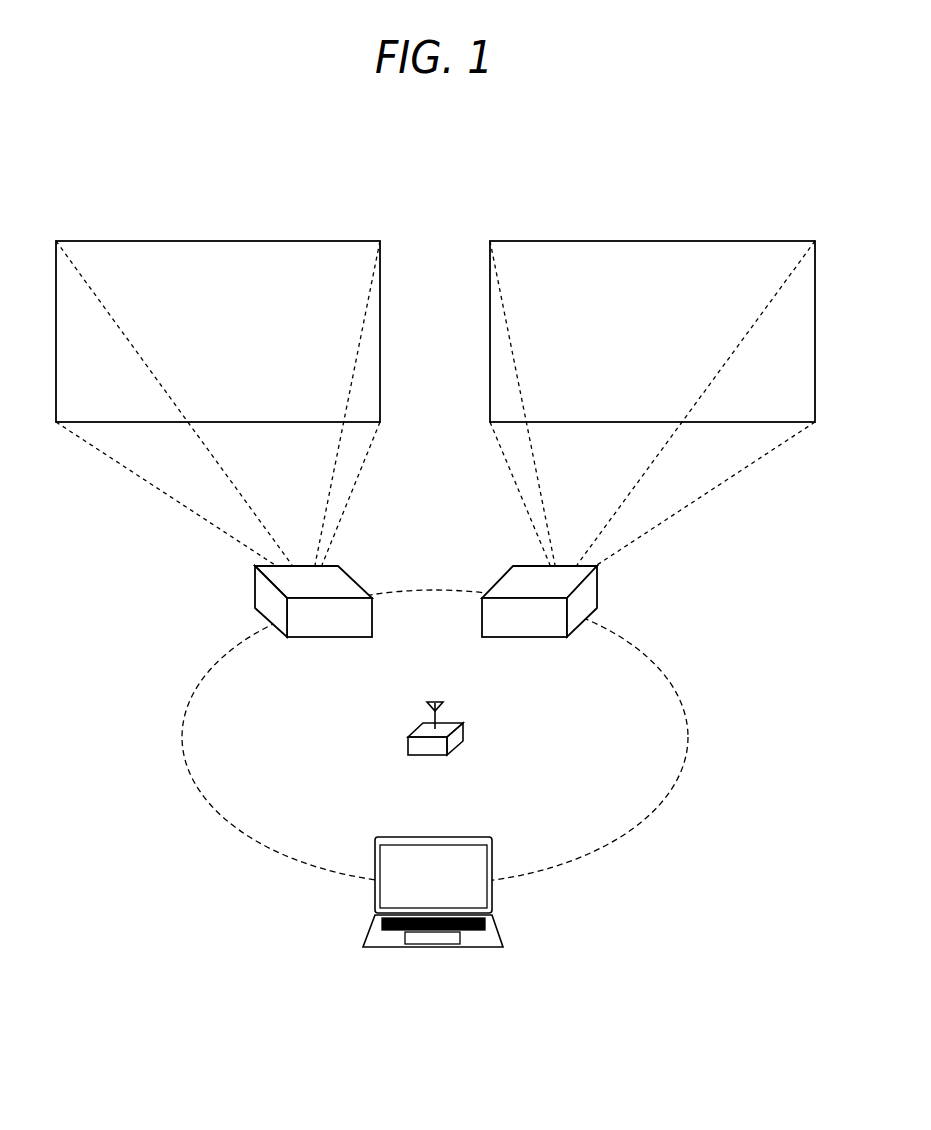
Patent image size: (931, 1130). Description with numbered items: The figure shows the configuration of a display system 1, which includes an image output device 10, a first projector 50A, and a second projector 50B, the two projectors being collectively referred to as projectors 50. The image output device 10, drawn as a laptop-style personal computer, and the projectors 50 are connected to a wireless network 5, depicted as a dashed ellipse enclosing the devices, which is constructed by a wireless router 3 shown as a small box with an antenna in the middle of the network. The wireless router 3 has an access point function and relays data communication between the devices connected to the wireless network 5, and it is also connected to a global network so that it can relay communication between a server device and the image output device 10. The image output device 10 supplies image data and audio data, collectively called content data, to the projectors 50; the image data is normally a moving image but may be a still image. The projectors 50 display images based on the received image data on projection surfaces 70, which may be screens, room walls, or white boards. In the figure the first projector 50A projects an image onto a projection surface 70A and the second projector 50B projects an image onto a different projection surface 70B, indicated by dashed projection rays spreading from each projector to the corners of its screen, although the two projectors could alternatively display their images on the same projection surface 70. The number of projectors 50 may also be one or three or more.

The display system 1 is at (170, 825).
The wireless router 3 is at (465, 732).
The wireless network 5 is at (652, 663).
The image output device 10 is at (495, 918).
The projectors 50 is at (427, 601).
The first projector 50A is at (258, 592).
The second projector 50B is at (599, 590).
The projection surfaces 70 is at (435, 309).
The projection surface 70A is at (107, 242).
The projection surface 70B is at (542, 242).